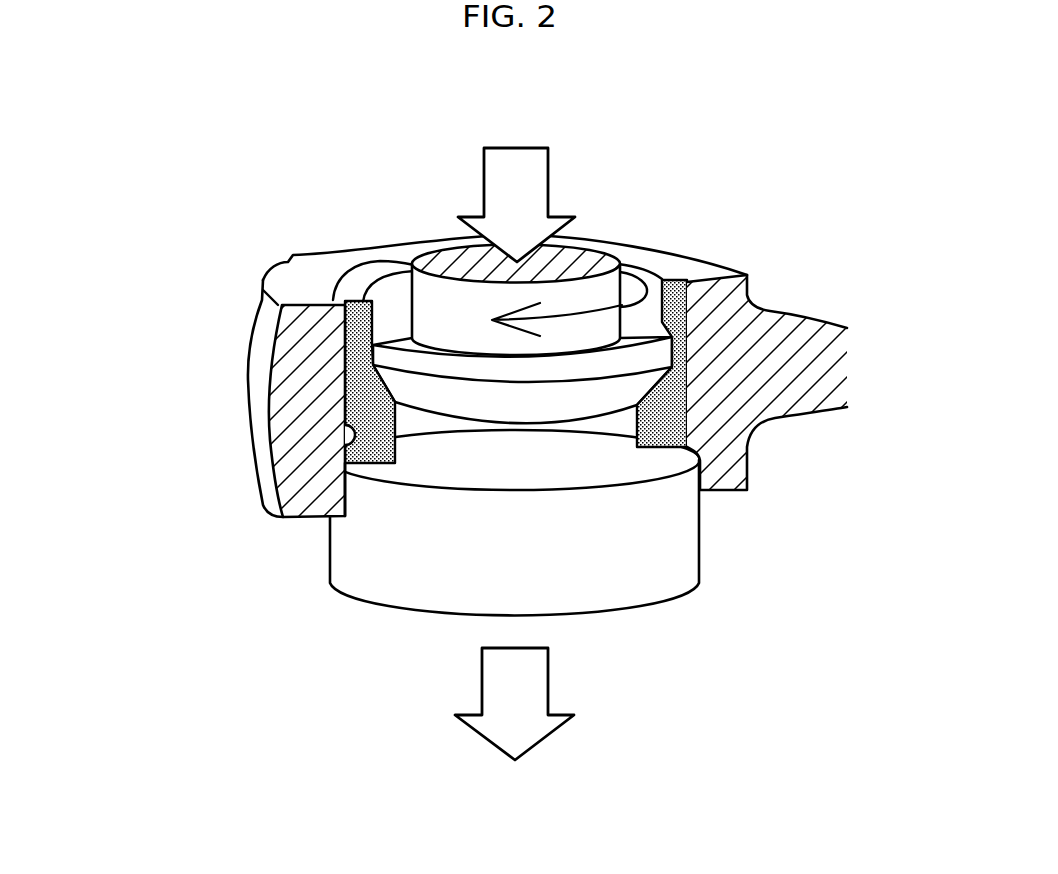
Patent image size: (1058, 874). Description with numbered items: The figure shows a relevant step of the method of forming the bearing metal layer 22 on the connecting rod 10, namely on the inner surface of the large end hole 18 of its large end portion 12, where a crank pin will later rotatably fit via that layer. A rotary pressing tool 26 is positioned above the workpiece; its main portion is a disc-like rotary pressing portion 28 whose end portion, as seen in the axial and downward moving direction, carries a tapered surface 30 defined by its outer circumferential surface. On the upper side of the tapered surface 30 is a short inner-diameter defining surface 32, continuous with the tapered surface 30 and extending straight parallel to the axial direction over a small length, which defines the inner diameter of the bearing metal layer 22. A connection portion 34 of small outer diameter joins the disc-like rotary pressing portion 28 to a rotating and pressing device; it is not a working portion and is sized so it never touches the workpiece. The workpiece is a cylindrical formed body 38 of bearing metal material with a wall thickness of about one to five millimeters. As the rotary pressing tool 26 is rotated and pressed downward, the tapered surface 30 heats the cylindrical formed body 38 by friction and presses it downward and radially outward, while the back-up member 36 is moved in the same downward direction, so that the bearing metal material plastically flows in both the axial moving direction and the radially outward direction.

The connecting rod 10 is at (745, 213).
The large end portion 12 is at (235, 386).
The large end hole 18 is at (347, 465).
The bearing metal layer 22 is at (347, 339).
The rotary pressing tool 26 is at (628, 243).
The disc-like rotary pressing portion 28 is at (675, 323).
The tapered surface 30 is at (633, 387).
The inner-diameter defining surface 32 is at (636, 324).
The connection portion 34 is at (430, 302).
The back-up member 36 is at (347, 562).
The cylindrical formed body 38 is at (338, 414).